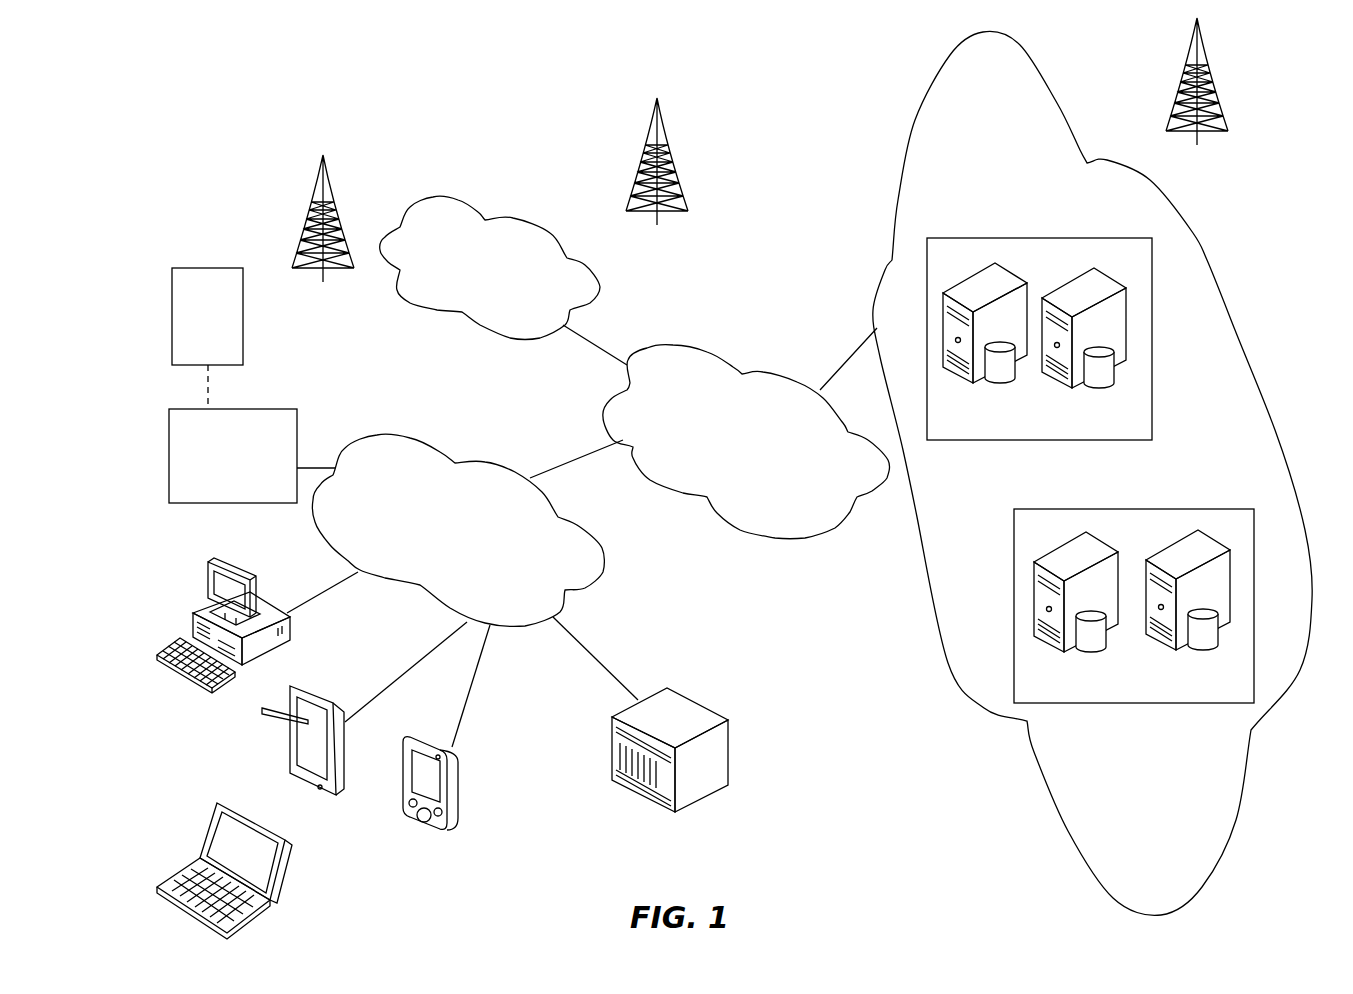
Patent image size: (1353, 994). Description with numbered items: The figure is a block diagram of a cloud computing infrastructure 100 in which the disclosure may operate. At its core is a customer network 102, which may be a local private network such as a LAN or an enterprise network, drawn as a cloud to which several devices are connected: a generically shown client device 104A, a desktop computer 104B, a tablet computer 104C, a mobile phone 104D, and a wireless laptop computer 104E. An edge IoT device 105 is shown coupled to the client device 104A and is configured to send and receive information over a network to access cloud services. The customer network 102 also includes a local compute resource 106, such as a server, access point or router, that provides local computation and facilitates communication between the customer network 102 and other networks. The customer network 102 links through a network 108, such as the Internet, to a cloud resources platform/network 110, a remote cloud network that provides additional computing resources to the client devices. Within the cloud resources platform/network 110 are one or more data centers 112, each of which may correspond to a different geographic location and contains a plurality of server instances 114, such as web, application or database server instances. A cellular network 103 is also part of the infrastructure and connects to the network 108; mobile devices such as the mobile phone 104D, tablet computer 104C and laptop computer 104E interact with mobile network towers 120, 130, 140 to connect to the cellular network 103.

The cloud computing infrastructure 100 is at (402, 125).
The customer network 102 is at (425, 440).
The cellular network 103 is at (513, 218).
The client device 104A is at (260, 409).
The desktop computer 104B is at (233, 567).
The tablet computer 104C is at (316, 690).
The mobile phone 104D is at (457, 738).
The laptop computer 104E is at (290, 853).
The edge IoT device 105 is at (185, 268).
The local compute resource 106 is at (668, 688).
The network 108 is at (682, 343).
The cloud resources platform/network 110 is at (1195, 238).
The data center 112 is at (1090, 448).
The server instance 114 is at (1209, 680).
The mobile network tower 120 is at (657, 179).
The mobile network tower 130 is at (323, 234).
The mobile network tower 140 is at (1197, 97).